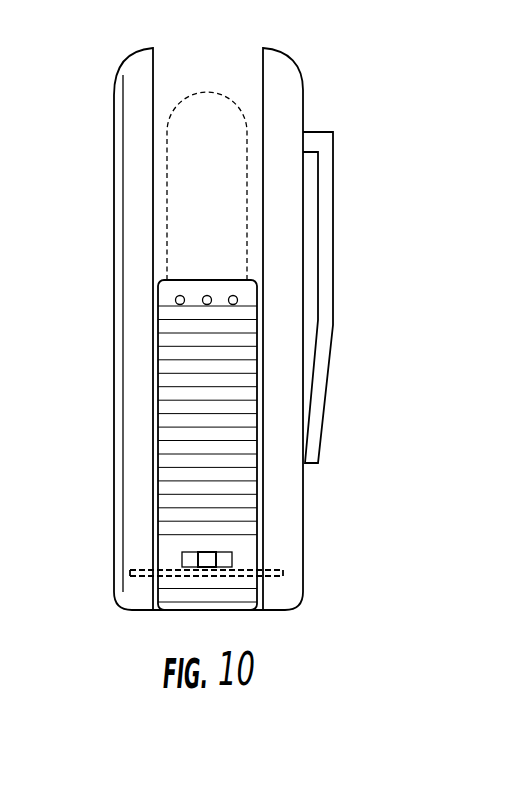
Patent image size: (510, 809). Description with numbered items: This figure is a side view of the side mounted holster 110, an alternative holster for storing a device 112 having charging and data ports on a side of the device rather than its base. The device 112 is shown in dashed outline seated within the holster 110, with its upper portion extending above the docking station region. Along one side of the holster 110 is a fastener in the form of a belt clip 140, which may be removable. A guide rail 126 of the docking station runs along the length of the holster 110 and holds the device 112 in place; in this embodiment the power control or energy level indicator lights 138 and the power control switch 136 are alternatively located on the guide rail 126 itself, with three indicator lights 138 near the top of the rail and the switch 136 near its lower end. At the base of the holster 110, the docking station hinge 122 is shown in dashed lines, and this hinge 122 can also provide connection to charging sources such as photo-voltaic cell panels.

The holster 110 is at (118, 455).
The device 112 is at (247, 127).
The docking station hinge 122 is at (140, 568).
The guide rail 126 is at (245, 327).
The power switch 136 is at (207, 552).
The power control or energy level indicator lights 138 is at (205, 295).
The belt clip 140 is at (325, 162).